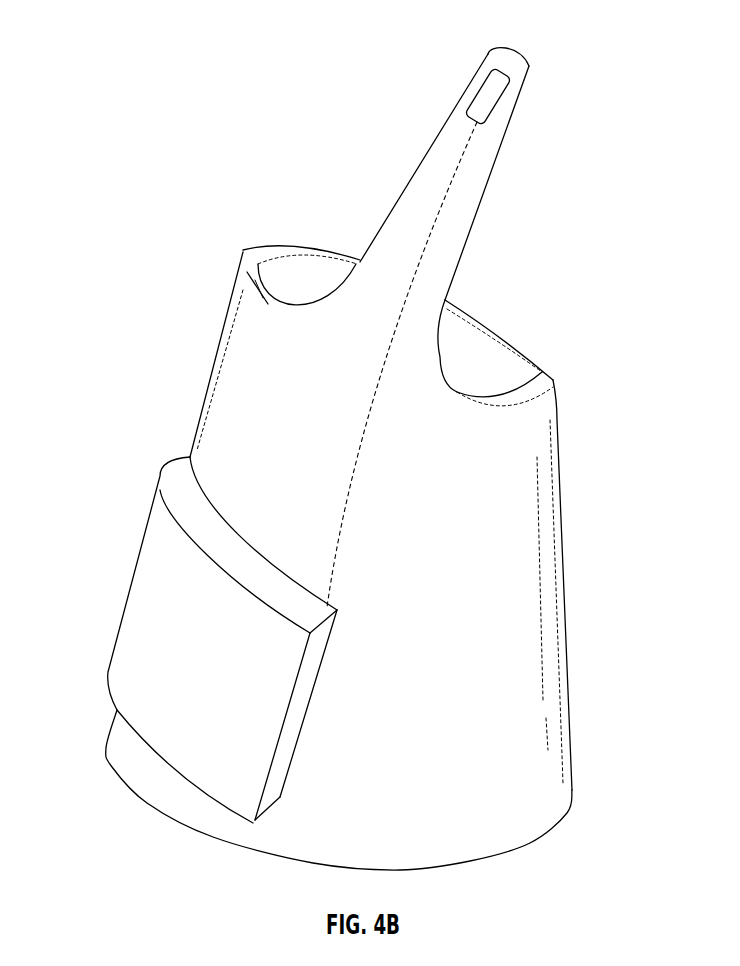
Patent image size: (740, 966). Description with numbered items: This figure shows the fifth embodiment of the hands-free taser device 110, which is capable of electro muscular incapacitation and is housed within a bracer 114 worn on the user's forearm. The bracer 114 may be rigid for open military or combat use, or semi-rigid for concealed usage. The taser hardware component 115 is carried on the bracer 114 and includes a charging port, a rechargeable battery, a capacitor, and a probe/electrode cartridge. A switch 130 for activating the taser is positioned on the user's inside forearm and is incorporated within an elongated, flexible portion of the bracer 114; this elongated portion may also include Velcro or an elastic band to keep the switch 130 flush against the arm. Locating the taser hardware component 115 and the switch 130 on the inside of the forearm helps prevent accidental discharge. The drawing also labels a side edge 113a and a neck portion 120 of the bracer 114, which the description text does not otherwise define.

The hands-free taser device 110 is at (162, 160).
The side edge 113a is at (573, 597).
The bracer 114 is at (527, 657).
The taser hardware component 115 is at (110, 573).
The neck extension 120 is at (465, 287).
The switch 130 is at (537, 77).